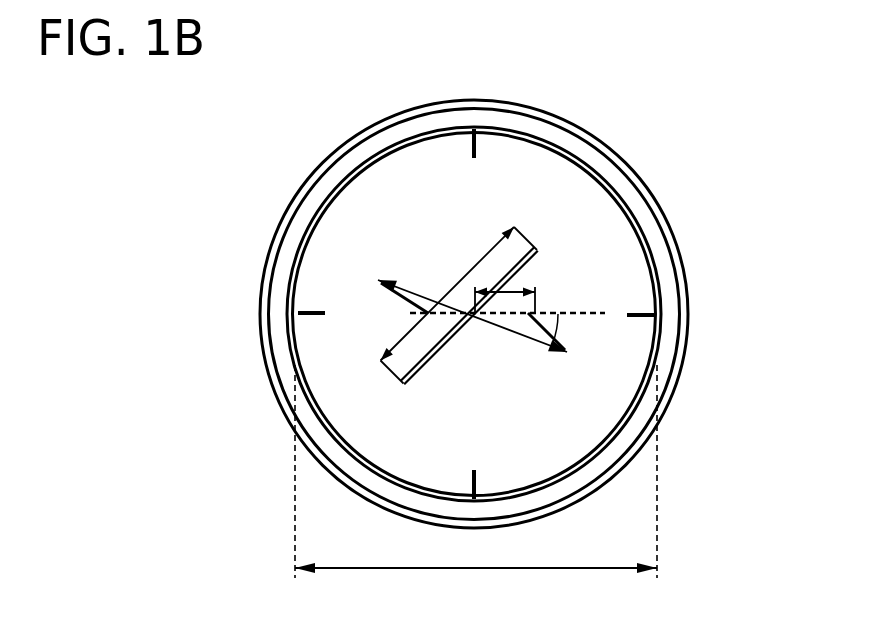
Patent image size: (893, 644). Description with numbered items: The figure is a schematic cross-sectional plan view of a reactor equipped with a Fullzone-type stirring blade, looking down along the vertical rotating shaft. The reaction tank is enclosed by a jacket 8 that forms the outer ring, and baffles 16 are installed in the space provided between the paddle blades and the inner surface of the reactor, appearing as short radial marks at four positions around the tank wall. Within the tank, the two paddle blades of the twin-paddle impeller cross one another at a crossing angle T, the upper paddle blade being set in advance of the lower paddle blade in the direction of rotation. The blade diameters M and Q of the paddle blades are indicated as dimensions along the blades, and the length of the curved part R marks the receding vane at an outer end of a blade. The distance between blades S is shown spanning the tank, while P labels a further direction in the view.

The jacket 8 is at (660, 198).
The baffle 16 is at (478, 146).
The distance between blades S is at (476, 483).
The direction arrow P is at (485, 316).
The blade diameter Q is at (530, 339).
The crossing angle T is at (447, 327).
The blade diameter M is at (484, 259).
The length of curved part R is at (531, 288).